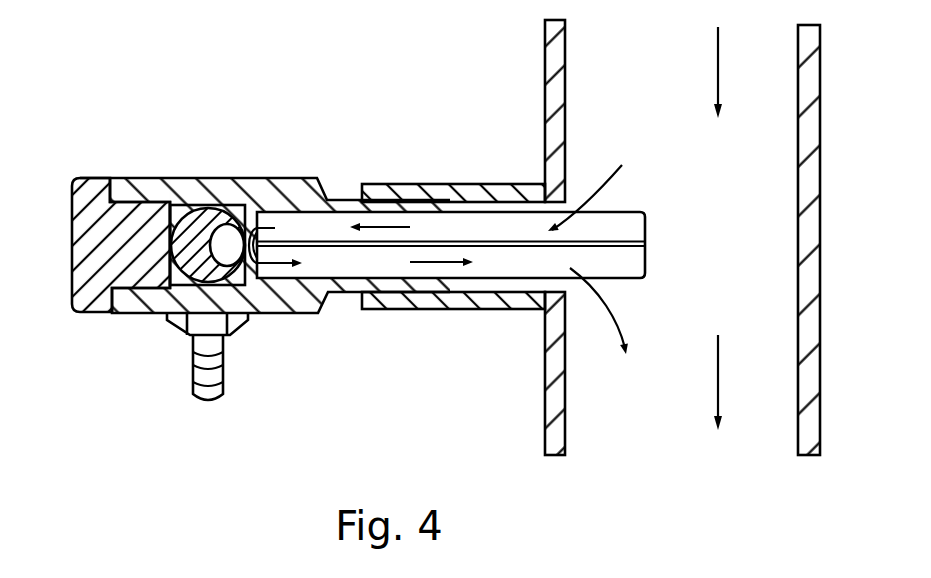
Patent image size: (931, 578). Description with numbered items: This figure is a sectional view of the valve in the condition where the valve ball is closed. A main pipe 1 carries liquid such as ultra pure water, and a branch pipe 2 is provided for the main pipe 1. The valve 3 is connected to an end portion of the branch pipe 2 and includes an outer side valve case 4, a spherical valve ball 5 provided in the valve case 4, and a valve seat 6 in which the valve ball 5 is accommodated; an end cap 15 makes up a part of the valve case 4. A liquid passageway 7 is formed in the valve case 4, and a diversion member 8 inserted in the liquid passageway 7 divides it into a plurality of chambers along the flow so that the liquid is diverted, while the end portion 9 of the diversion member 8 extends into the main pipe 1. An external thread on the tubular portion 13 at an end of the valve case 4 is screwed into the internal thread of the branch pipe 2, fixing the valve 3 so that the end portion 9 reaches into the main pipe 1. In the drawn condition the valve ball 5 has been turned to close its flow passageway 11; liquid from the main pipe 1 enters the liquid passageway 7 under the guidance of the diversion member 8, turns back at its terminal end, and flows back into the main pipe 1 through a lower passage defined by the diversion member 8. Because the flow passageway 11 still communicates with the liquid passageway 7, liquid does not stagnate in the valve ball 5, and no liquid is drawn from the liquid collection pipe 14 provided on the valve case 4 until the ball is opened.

The main pipe 1 is at (548, 45).
The branch pipe 2 is at (407, 302).
The valve 3 is at (287, 172).
The valve case 4 is at (295, 302).
The valve ball 5 is at (207, 203).
The valve seat 6 is at (160, 190).
The liquid passageway 7 is at (313, 227).
The diversion member 8 is at (490, 265).
The end portion 9 is at (637, 228).
The flow passageway 11 is at (225, 235).
The tubular portion 13 is at (392, 198).
The liquid collection pipe 14 is at (193, 372).
The end cap 15 is at (73, 262).